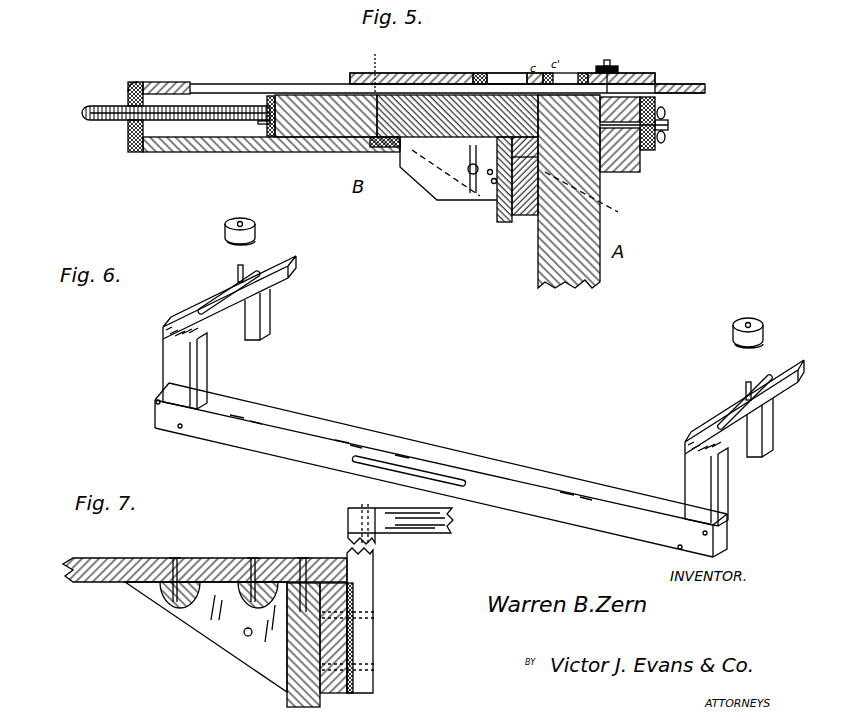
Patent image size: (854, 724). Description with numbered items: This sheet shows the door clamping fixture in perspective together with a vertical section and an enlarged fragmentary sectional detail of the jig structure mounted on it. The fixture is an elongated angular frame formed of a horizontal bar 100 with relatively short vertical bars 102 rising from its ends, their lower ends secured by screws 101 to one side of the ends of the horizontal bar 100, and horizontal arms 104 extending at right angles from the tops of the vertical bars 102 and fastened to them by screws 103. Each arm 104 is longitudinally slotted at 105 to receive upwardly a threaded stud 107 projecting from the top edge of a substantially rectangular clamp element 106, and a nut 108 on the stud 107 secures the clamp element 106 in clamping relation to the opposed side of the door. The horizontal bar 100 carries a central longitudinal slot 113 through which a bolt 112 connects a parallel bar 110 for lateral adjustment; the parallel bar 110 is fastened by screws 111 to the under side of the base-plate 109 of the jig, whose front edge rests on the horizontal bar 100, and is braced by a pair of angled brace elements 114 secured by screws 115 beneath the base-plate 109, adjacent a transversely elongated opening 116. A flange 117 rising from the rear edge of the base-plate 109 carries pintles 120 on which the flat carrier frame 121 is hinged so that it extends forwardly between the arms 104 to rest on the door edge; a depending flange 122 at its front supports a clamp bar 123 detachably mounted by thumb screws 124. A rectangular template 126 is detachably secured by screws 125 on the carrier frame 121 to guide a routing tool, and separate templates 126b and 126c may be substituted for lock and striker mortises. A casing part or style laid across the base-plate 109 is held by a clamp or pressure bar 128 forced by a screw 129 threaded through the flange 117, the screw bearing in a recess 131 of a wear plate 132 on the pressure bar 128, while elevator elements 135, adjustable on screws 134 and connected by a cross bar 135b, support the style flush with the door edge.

In FIG. 5, the horizontal bar 100 is at (522, 217).
In FIG. 6, the horizontal bar 100 is at (291, 420).
In FIG. 7, the horizontal bar 100 is at (330, 697).
In FIG. 5, the screws 101 is at (470, 198).
In FIG. 6, the screws 101 is at (178, 425).
In FIG. 7, the screws 101 is at (377, 665).
In FIG. 5, the vertical bars 102 is at (536, 228).
In FIG. 6, the vertical bars 102 is at (172, 352).
In FIG. 7, the vertical bars 102 is at (365, 595).
In FIG. 6, the screws 103 is at (172, 325).
In FIG. 7, the screws 103 is at (365, 508).
In FIG. 5, the horizontal arms 104 is at (699, 86).
In FIG. 6, the horizontal arms 104 is at (213, 294).
In FIG. 7, the horizontal arms 104 is at (398, 530).
In FIG. 6, the slot 105 is at (262, 268).
In FIG. 7, the slot 105 is at (450, 522).
In FIG. 6, the clamp element 106 is at (261, 313).
In FIG. 5, the threaded stud 107 is at (607, 60).
In FIG. 6, the threaded stud 107 is at (239, 268).
In FIG. 5, the nut 108 is at (618, 66).
In FIG. 6, the nut 108 is at (256, 221).
In FIG. 5, the base-plate 109 is at (190, 152).
In FIG. 7, the base-plate 109 is at (95, 558).
In FIG. 5, the parallel bar 110 is at (500, 224).
In FIG. 7, the parallel bar 110 is at (288, 692).
In FIG. 7, the screws 111 is at (305, 560).
In FIG. 5, the bolt 112 is at (597, 199).
In FIG. 6, the longitudinal slot 113 is at (354, 460).
In FIG. 5, the angled brace elements 114 is at (432, 196).
In FIG. 7, the angled brace elements 114 is at (198, 628).
In FIG. 7, the screws 115 is at (236, 543).
In FIG. 5, the transversely elongated opening 116 is at (392, 152).
In FIG. 5, the flange 117 is at (130, 94).
In FIG. 5, the pintles 120 is at (133, 81).
In FIG. 5, the carrier frame 121 is at (170, 82).
In FIG. 5, the flange 122 is at (648, 153).
In FIG. 5, the clamp bar 123 is at (622, 173).
In FIG. 5, the thumb screws 124 is at (670, 125).
In FIG. 5, the screws 125 is at (371, 64).
In FIG. 5, the template 126 is at (421, 72).
In FIG. 5, the template 126b is at (503, 70).
In FIG. 5, the template 126c is at (571, 73).
In FIG. 5, the clamp or pressure bar 128 is at (298, 94).
In FIG. 5, the screw 129 is at (92, 123).
In FIG. 5, the recess 131 is at (264, 127).
In FIG. 5, the wear plate 132 is at (270, 95).
In FIG. 5, the screws 134 is at (473, 157).
In FIG. 5, the elevator element 135 is at (348, 150).
In FIG. 5, the cross bar 135b is at (385, 152).